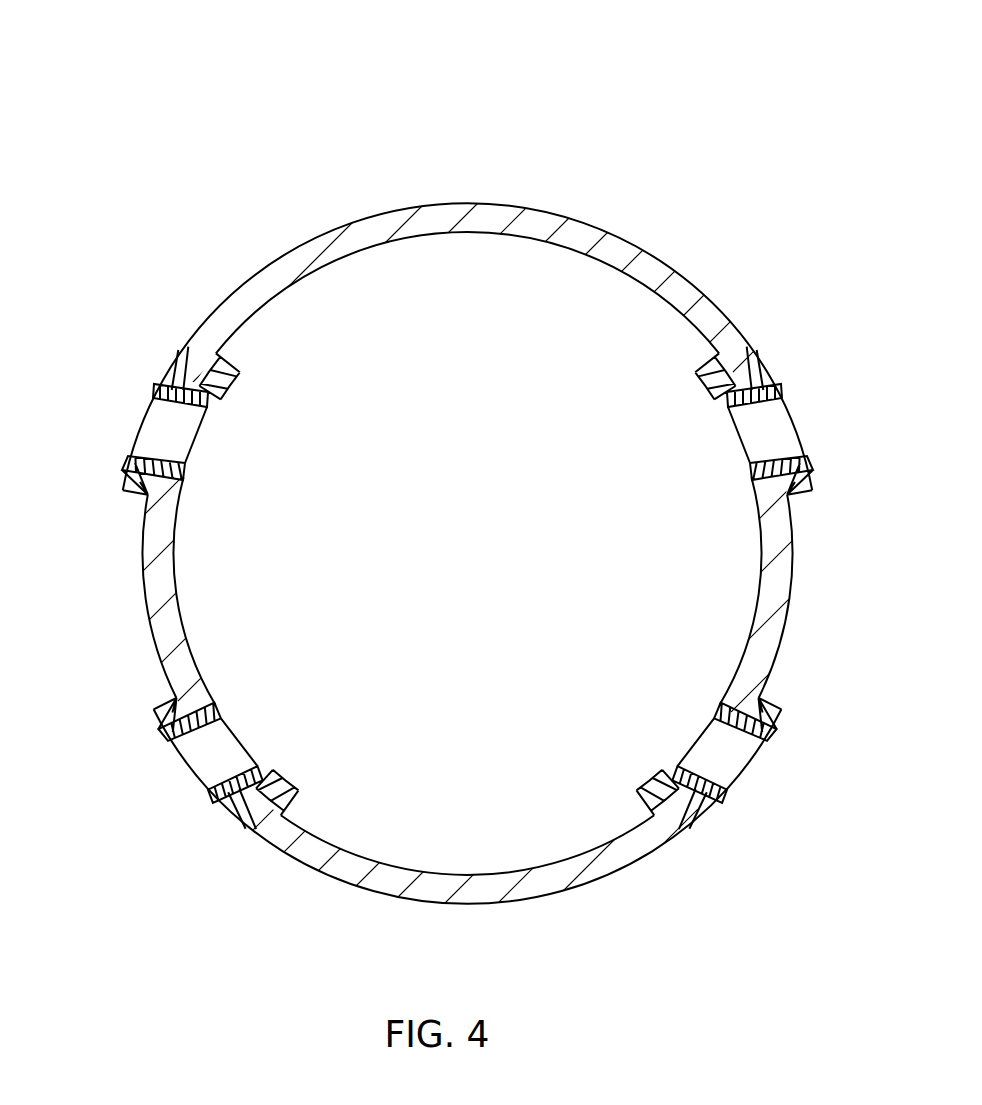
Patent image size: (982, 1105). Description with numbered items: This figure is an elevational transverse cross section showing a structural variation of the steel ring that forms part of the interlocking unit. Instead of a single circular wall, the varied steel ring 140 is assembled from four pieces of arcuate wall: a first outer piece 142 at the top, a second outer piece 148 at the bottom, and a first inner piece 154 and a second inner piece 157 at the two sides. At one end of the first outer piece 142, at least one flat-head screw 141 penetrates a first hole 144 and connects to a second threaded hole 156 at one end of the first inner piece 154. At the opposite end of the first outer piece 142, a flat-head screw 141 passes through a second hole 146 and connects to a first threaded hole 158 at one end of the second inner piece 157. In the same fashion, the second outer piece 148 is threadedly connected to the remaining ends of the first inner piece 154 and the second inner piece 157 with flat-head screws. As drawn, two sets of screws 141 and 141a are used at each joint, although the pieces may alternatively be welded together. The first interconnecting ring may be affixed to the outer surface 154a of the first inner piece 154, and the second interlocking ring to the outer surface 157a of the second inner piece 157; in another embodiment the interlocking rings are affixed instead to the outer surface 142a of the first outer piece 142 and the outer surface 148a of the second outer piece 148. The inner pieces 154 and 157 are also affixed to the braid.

The varied steel ring 140 is at (174, 96).
The flat-head screw 141 is at (177, 379).
The screw 141a is at (138, 449).
The first outer piece 142 is at (529, 226).
The outer surface of the first outer piece 142a is at (411, 205).
The first hole 144 is at (187, 347).
The second hole 146 is at (748, 347).
The second outer piece 148 is at (602, 858).
The outer surface of the second outer piece 148a is at (405, 905).
The first inner piece 154 is at (160, 546).
The outer surface of the first inner piece 154a is at (149, 616).
The second threaded hole 156 is at (209, 424).
The second inner piece 157 is at (786, 567).
The outer surface of the second inner piece 157a is at (790, 633).
The first threaded hole 158 is at (727, 424).